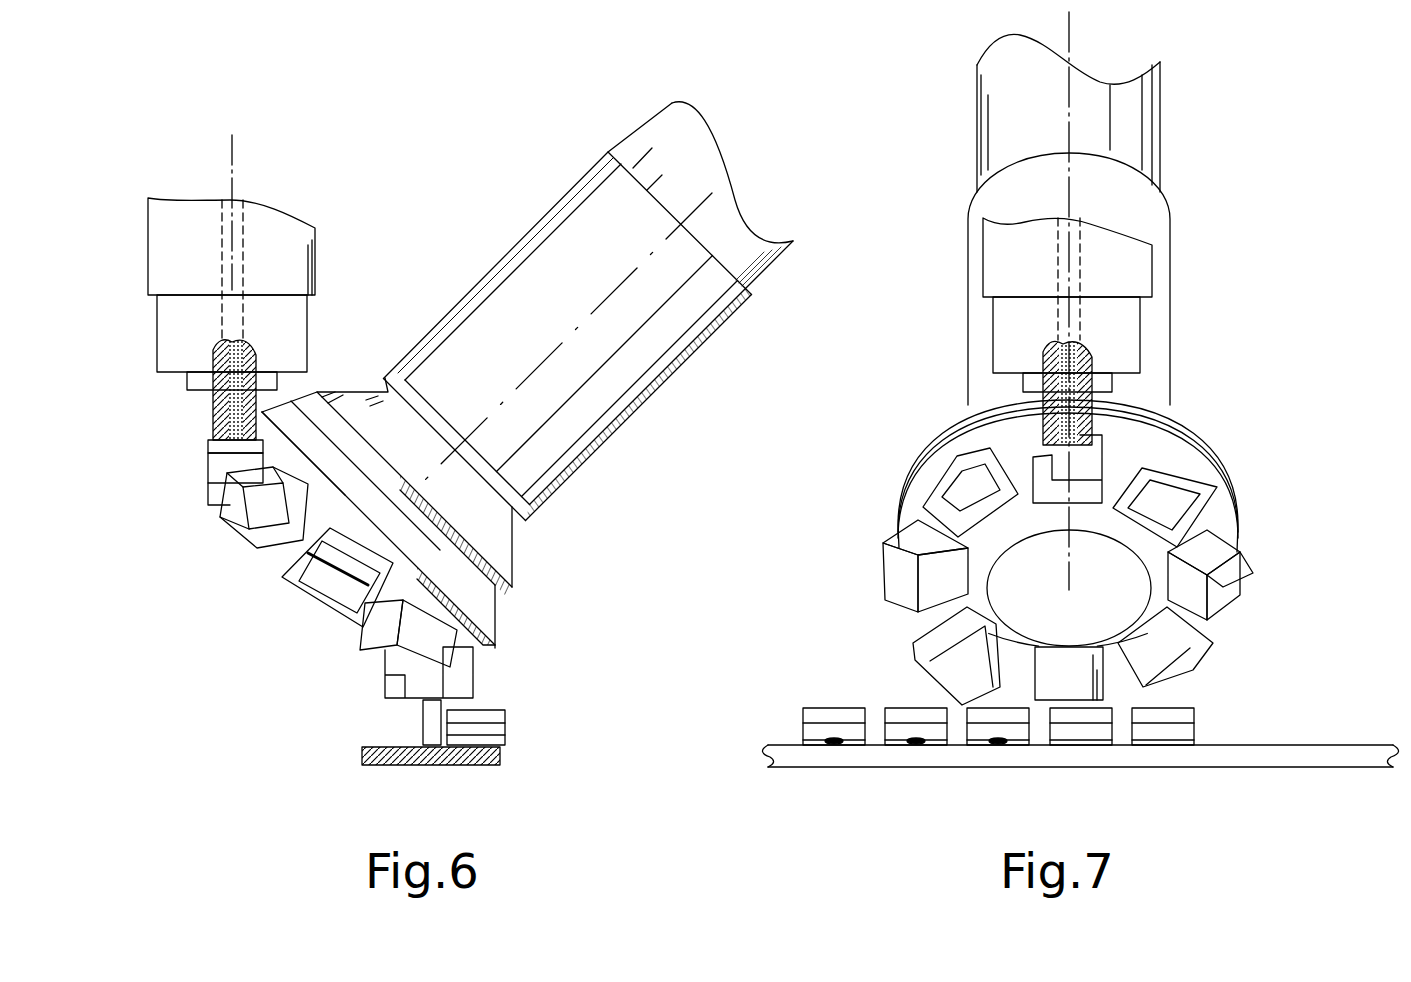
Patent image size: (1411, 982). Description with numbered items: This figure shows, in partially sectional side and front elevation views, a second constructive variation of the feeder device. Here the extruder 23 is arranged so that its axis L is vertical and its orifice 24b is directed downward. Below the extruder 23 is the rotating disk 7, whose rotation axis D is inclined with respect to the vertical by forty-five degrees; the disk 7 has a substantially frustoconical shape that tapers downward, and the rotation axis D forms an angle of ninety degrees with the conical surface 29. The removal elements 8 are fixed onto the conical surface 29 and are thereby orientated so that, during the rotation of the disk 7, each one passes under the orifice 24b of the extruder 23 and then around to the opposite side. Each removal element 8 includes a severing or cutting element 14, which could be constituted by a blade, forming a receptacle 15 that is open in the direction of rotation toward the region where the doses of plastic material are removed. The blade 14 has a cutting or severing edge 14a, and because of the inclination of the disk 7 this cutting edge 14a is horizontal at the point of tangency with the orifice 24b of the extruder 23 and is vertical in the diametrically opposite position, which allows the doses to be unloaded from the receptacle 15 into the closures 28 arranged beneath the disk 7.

In FIG. 6, the axis of the extruder L is at (232, 152).
In FIG. 6, the rotation axis D is at (738, 163).
In FIG. 6, the rotating disk 7 is at (330, 435).
In FIG. 6, the removal element 8 is at (300, 617).
In FIG. 7, the removal element 8 is at (915, 632).
In FIG. 6, the severing or cutting element 14 is at (320, 558).
In FIG. 7, the severing or cutting element 14 is at (897, 561).
In FIG. 6, the cutting or severing edge 14a is at (228, 518).
In FIG. 7, the cutting or severing edge 14a is at (905, 527).
In FIG. 6, the receptacle 15 is at (393, 700).
In FIG. 7, the receptacle 15 is at (1236, 600).
In FIG. 6, the extruder 23 is at (293, 244).
In FIG. 7, the extruder 23 is at (1120, 334).
In FIG. 6, the orifice 24b is at (209, 442).
In FIG. 7, the orifice 24b is at (1047, 447).
In FIG. 7, the closures 28 is at (1197, 724).
In FIG. 6, the conical surface 29 is at (433, 603).